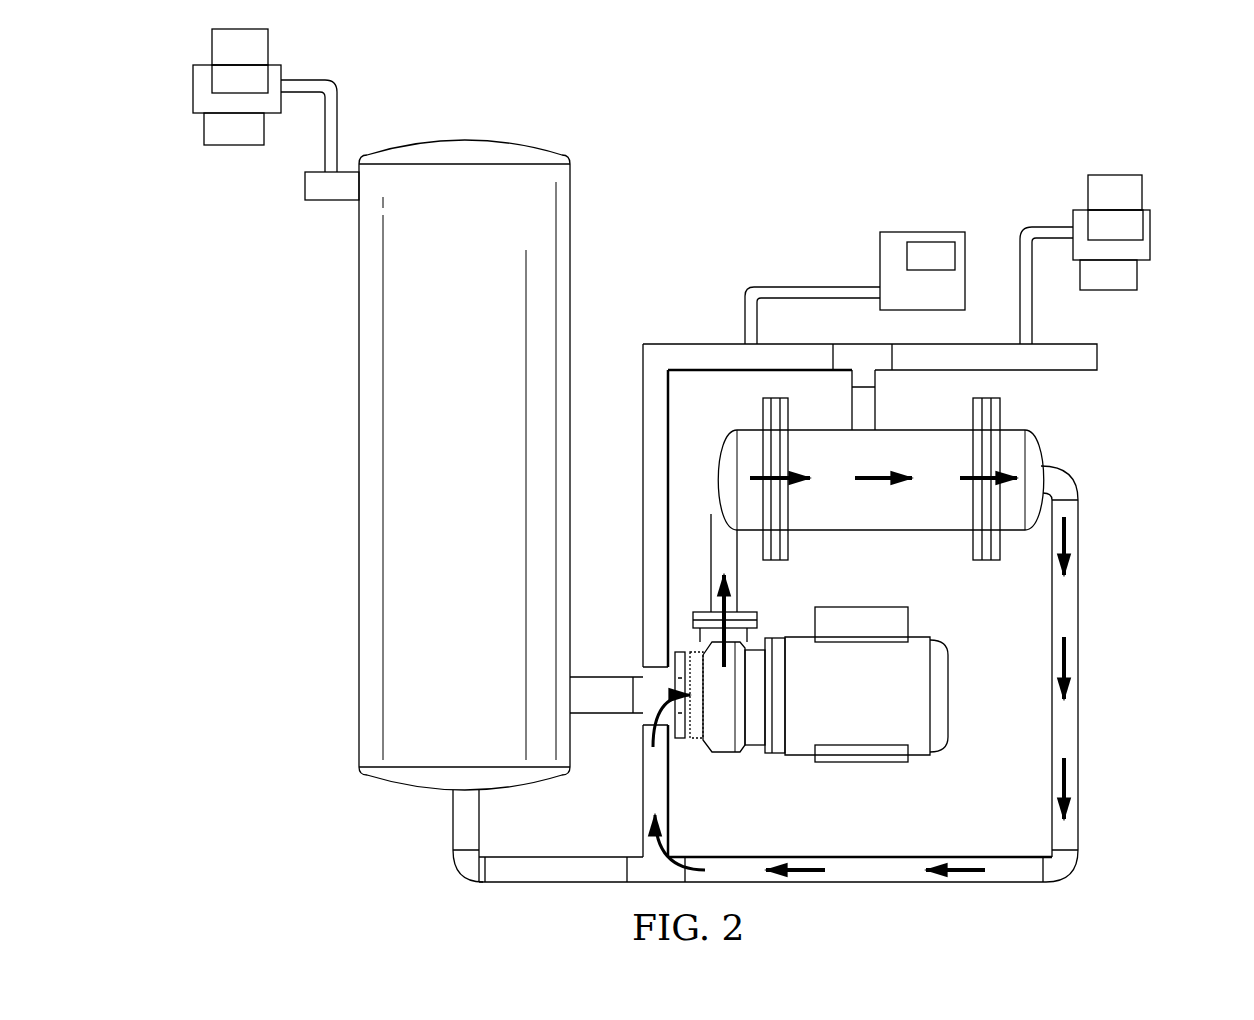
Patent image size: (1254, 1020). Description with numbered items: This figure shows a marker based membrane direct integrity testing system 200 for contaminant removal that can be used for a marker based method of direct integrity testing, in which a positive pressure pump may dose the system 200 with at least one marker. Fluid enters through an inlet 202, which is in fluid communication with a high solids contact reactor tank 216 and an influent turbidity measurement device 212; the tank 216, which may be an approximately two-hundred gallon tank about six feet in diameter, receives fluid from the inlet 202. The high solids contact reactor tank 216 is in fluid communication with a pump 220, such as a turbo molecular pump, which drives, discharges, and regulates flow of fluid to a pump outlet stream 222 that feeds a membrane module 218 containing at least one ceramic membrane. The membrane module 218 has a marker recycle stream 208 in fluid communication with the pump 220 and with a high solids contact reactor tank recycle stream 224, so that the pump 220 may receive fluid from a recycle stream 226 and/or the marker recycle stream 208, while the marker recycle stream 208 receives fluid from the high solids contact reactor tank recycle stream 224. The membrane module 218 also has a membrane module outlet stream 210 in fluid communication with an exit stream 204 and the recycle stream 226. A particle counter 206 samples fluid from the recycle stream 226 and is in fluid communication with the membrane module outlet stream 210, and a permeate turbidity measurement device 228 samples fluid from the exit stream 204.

The marker based membrane direct integrity testing system 200 is at (1048, 114).
The inlet 202 is at (304, 188).
The exit stream 204 is at (1099, 363).
The particle counter 206 is at (927, 225).
The marker recycle stream 208 is at (1086, 543).
The membrane module outlet stream 210 is at (882, 398).
The influent turbidity measurement device 212 is at (189, 86).
The high solids contact reactor tank 216 is at (578, 222).
The membrane module 218 is at (1049, 443).
The pump 220 is at (864, 772).
The pump outlet stream 222 is at (748, 601).
The high solids contact reactor tank recycle stream 224 is at (515, 889).
The recycle stream 226 is at (691, 342).
The permeate turbidity measurement device 228 is at (1157, 225).